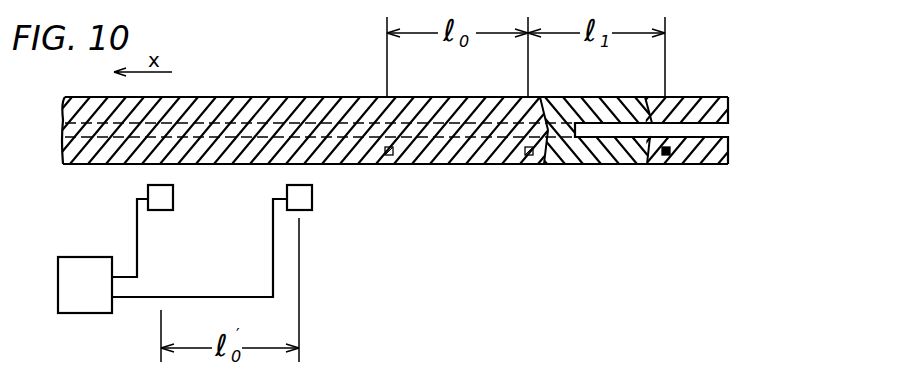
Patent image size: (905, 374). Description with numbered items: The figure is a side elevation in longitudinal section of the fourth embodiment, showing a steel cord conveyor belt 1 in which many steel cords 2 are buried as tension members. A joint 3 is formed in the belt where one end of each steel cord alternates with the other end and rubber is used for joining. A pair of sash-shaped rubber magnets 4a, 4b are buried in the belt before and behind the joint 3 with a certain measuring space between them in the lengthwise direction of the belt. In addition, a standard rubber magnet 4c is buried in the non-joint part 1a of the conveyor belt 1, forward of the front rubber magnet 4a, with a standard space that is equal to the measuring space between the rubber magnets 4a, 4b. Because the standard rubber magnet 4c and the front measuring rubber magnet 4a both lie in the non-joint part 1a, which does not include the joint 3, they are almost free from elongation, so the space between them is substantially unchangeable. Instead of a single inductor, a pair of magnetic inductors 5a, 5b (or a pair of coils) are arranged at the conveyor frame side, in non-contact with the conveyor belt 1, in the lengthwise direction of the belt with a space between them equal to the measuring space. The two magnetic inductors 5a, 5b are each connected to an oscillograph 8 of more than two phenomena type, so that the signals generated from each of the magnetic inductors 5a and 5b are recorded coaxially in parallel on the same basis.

The steel cord conveyor belt 1 is at (272, 97).
The non-joint part 1a is at (348, 103).
The steel cords 2 is at (672, 128).
The joint 3 is at (580, 103).
The rubber magnet 4a is at (529, 158).
The rubber magnet 4b is at (666, 158).
The standard rubber magnet 4c is at (389, 158).
The magnetic inductor 5a is at (173, 198).
The magnetic inductor 5b is at (312, 198).
The oscillograph 8 is at (86, 257).